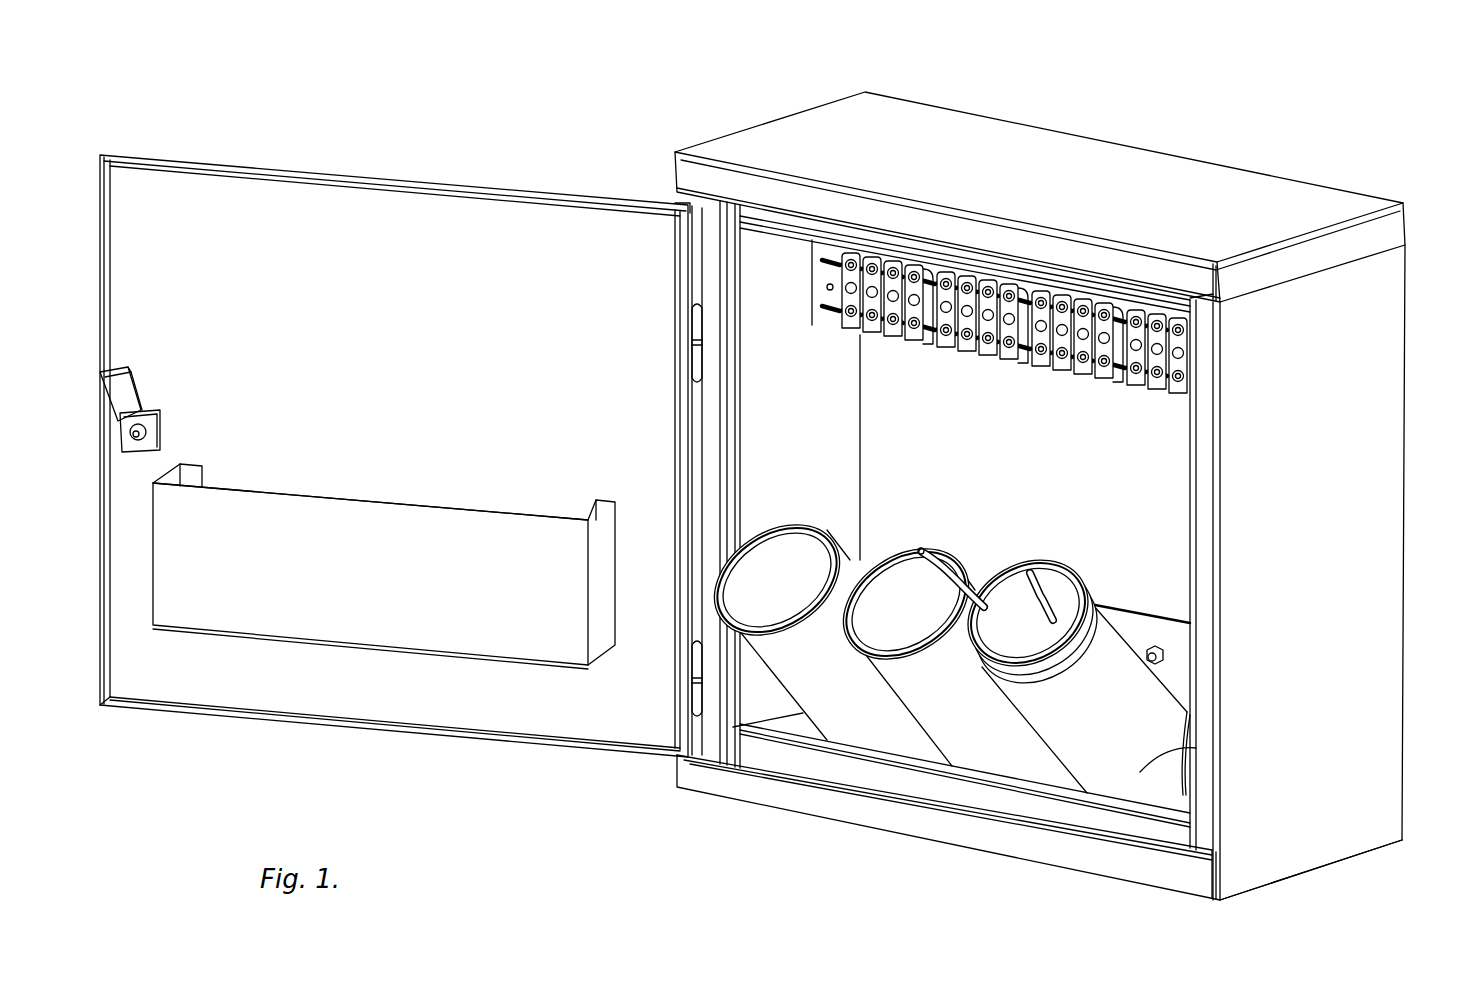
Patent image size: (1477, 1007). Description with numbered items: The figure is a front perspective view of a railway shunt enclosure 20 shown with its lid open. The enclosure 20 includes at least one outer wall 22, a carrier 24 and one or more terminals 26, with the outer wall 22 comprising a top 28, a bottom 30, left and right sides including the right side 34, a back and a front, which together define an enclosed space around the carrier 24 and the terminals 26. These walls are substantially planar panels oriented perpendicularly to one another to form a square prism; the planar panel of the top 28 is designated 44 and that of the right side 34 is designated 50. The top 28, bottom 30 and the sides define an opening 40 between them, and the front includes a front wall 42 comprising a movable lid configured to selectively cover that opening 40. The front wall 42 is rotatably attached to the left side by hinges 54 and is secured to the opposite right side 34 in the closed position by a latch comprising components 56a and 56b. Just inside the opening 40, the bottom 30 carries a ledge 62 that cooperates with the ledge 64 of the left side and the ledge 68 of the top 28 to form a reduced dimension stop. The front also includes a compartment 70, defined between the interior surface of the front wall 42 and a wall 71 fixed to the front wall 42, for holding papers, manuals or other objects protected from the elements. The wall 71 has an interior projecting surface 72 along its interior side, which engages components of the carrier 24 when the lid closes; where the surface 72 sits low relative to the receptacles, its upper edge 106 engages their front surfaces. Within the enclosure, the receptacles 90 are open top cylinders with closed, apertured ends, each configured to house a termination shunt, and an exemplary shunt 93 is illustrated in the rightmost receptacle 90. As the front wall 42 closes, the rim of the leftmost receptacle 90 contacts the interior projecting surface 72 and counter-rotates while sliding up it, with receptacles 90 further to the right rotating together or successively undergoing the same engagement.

The railway shunt enclosure 20 is at (1036, 476).
The outer wall 22 is at (1040, 175).
The carrier 24 is at (847, 683).
The terminals 26 is at (838, 310).
The top 28 is at (1423, 210).
The bottom 30 is at (914, 818).
The right side 34 is at (1342, 570).
The opening 40 is at (1162, 632).
The front wall 42 is at (297, 200).
The planar panel of top 44 is at (958, 128).
The planar panel of right side 50 is at (1378, 720).
The hinges 54 is at (697, 328).
The latch component 56a is at (130, 378).
The latch component 56b is at (155, 426).
The ledge 62 is at (1078, 800).
The ledge of left side 64 is at (738, 270).
The ledge of top 68 is at (855, 235).
The compartment 70 is at (384, 537).
The wall 71 is at (238, 582).
The interior projecting surface 72 is at (402, 528).
The receptacles 90 is at (820, 532).
The shunt 93 is at (1052, 567).
The upper edge 106 is at (346, 500).